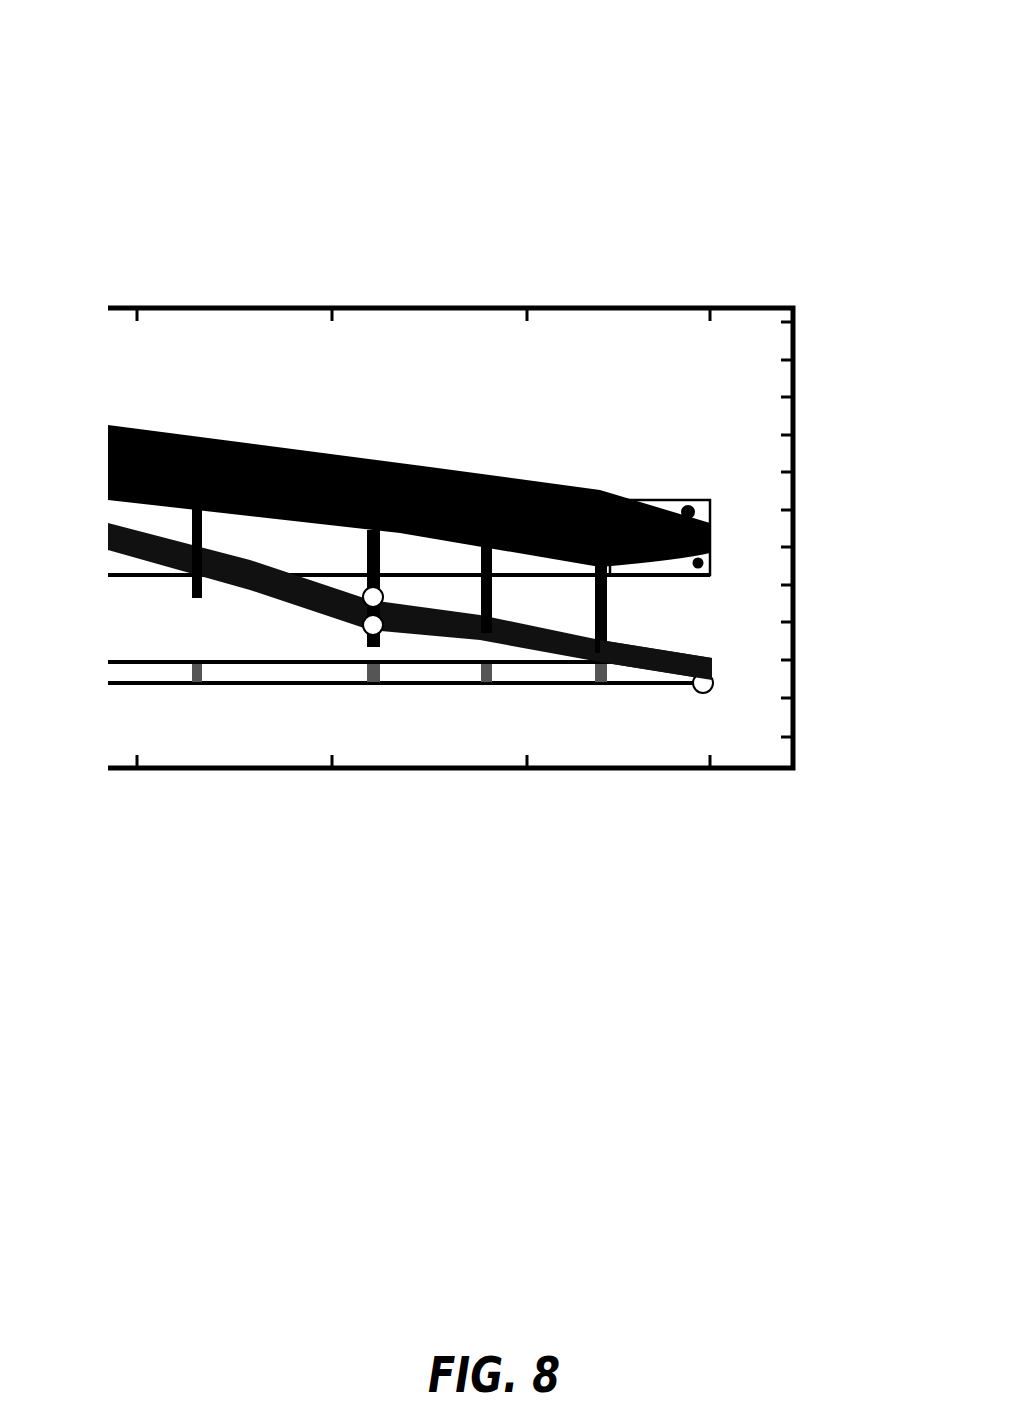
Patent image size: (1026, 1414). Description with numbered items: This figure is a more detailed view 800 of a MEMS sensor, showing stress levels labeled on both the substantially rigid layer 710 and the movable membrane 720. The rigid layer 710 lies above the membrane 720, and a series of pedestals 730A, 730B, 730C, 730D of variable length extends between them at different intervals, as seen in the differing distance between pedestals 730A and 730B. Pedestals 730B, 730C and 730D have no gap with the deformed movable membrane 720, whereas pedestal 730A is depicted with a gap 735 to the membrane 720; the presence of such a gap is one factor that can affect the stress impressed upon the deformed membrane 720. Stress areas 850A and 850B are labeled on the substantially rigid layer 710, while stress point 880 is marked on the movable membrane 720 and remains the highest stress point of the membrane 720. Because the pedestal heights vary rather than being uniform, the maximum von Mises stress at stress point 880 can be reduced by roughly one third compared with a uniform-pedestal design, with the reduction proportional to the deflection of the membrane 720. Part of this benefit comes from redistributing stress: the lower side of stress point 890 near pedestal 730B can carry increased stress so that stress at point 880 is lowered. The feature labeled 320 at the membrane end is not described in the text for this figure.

The detailed view 800 is at (156, 44).
The substantially rigid layer 710 is at (542, 483).
The movable membrane 720 is at (428, 635).
The pedestal 730A is at (195, 523).
The gap 735 is at (202, 540).
The pedestal 730B is at (367, 547).
The pedestal 730C is at (493, 602).
The pedestal 730D is at (607, 613).
The stress area 850A is at (695, 509).
The stress area 850B is at (703, 566).
The stress point 890 is at (350, 630).
The stress point 880 is at (710, 690).
The trajectory end segment 320 is at (617, 668).